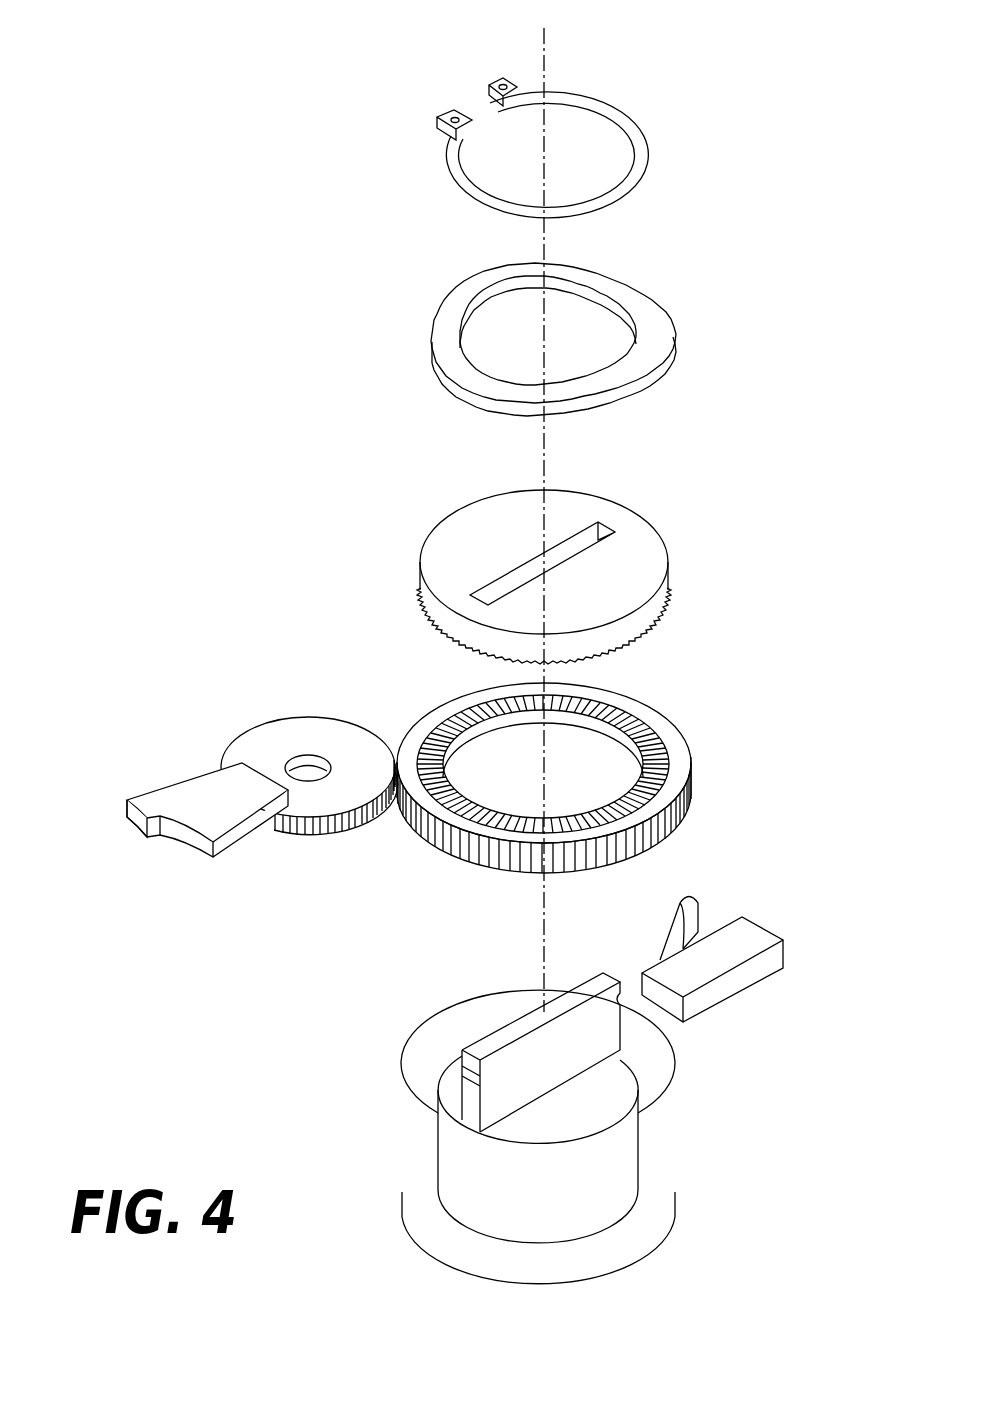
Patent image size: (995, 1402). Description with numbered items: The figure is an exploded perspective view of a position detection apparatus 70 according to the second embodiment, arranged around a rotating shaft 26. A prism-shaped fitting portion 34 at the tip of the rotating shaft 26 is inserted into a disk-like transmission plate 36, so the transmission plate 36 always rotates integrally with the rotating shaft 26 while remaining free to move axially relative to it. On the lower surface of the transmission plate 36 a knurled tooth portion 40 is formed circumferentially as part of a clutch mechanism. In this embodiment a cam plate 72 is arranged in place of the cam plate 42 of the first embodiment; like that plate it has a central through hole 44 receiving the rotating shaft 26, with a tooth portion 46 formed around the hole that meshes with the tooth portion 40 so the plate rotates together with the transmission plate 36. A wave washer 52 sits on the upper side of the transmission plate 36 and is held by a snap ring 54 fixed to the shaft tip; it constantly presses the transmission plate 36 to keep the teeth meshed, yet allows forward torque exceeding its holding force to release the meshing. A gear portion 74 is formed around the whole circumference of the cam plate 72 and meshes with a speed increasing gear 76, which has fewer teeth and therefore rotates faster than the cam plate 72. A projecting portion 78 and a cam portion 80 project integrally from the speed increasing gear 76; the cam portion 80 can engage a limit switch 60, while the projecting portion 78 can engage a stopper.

The rotating shaft 26 is at (582, 1133).
The fitting portion 34 is at (500, 1035).
The transmission plate 36 is at (505, 561).
The tooth portion 40 is at (425, 608).
The cam plate 42 is at (568, 779).
The through hole 44 is at (605, 730).
The tooth portion 46 is at (652, 728).
The wave washer 52 is at (432, 310).
The snap ring 54 is at (445, 167).
The limit switch 60 is at (748, 933).
The position detection apparatus 70 is at (315, 445).
The cam plate 72 is at (693, 755).
The gear portion 74 is at (433, 840).
The speed increasing gear 76 is at (282, 722).
The projecting portion 78 is at (135, 815).
The cam portion 80 is at (166, 835).